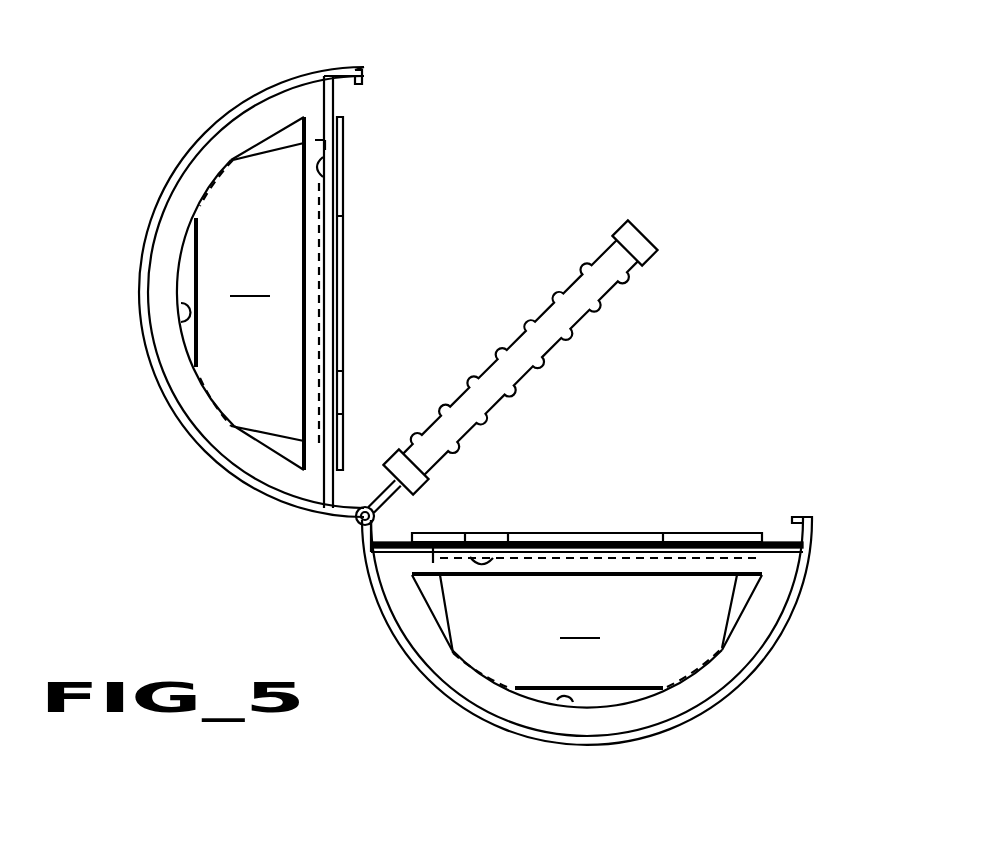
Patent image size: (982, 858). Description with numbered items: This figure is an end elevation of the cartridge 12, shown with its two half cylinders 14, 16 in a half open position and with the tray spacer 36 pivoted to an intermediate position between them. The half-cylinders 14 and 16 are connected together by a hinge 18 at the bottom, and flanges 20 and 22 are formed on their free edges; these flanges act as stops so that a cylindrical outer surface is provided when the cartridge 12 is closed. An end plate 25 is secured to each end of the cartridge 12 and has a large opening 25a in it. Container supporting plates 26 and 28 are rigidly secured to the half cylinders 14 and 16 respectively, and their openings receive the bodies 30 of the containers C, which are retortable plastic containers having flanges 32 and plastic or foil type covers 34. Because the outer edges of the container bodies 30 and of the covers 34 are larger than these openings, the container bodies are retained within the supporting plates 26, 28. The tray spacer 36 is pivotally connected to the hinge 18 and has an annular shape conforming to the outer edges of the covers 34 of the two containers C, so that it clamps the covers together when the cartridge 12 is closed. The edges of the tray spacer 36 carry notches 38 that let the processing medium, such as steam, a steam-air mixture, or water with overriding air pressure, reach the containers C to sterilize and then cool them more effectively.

The cartridge 12 is at (199, 113).
The half-cylinder 14 is at (188, 433).
The half-cylinder 16 is at (378, 603).
The hinge 18 is at (358, 522).
The flange 20 is at (362, 76).
The flange 22 is at (805, 517).
The end plate 25 is at (162, 288).
The large opening 25a is at (185, 318).
The container supporting plate 26 is at (334, 114).
The container supporting plate 28 is at (780, 545).
The container body 30 is at (479, 402).
The flange 32 is at (326, 167).
The cover 34 is at (343, 205).
The tray spacer 36 is at (652, 238).
The notches 38 is at (495, 366).
The container C is at (184, 251).